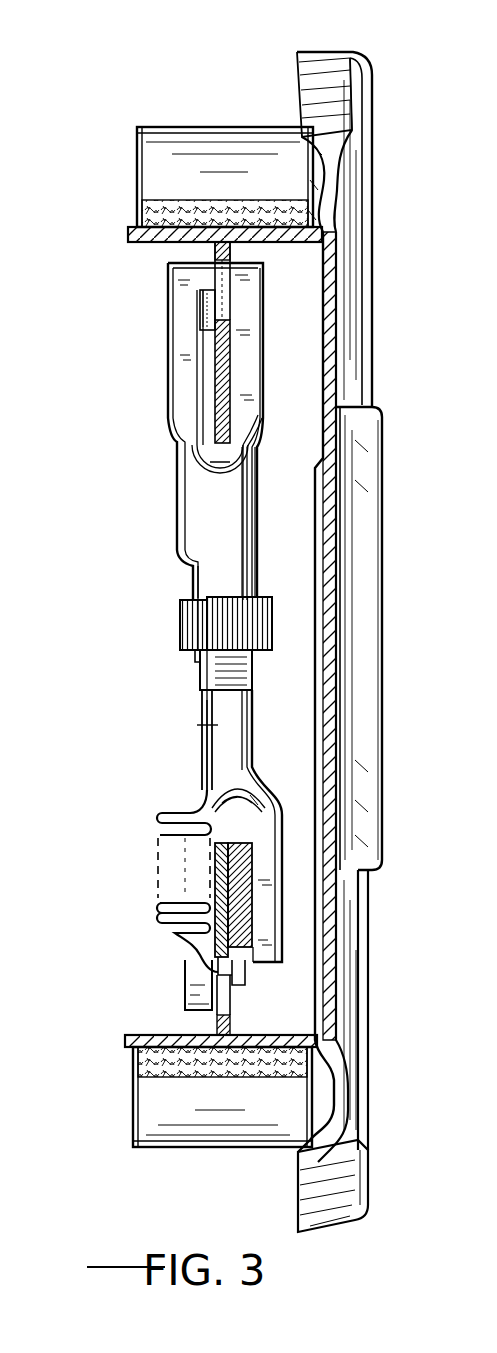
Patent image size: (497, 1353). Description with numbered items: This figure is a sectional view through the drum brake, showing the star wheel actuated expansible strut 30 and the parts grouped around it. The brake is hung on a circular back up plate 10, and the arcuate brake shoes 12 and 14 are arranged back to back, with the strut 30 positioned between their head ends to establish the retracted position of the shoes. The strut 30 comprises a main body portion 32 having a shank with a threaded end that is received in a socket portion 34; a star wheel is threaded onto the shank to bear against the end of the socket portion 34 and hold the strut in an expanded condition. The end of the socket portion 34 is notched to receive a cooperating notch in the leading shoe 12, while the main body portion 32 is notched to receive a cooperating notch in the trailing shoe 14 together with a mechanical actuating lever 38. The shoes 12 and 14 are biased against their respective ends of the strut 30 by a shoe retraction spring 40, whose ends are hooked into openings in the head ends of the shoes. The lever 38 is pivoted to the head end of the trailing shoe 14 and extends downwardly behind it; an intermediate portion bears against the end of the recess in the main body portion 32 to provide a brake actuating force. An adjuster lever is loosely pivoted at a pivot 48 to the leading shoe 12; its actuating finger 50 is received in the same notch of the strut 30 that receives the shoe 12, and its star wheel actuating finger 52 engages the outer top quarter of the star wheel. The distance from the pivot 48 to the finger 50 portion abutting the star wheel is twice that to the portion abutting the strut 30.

The back up plate 10 is at (343, 46).
The brake shoe 12 is at (128, 233).
The brake shoe 14 is at (125, 1042).
The expansible strut 30 is at (199, 689).
The main body portion 32 is at (252, 750).
The socket portion 34 is at (258, 538).
The mechanical actuating lever 38 is at (245, 974).
The shoe retraction spring 40 is at (200, 752).
The pivot 48 is at (196, 382).
The actuating finger 50 is at (205, 305).
The star wheel actuating finger 52 is at (197, 590).